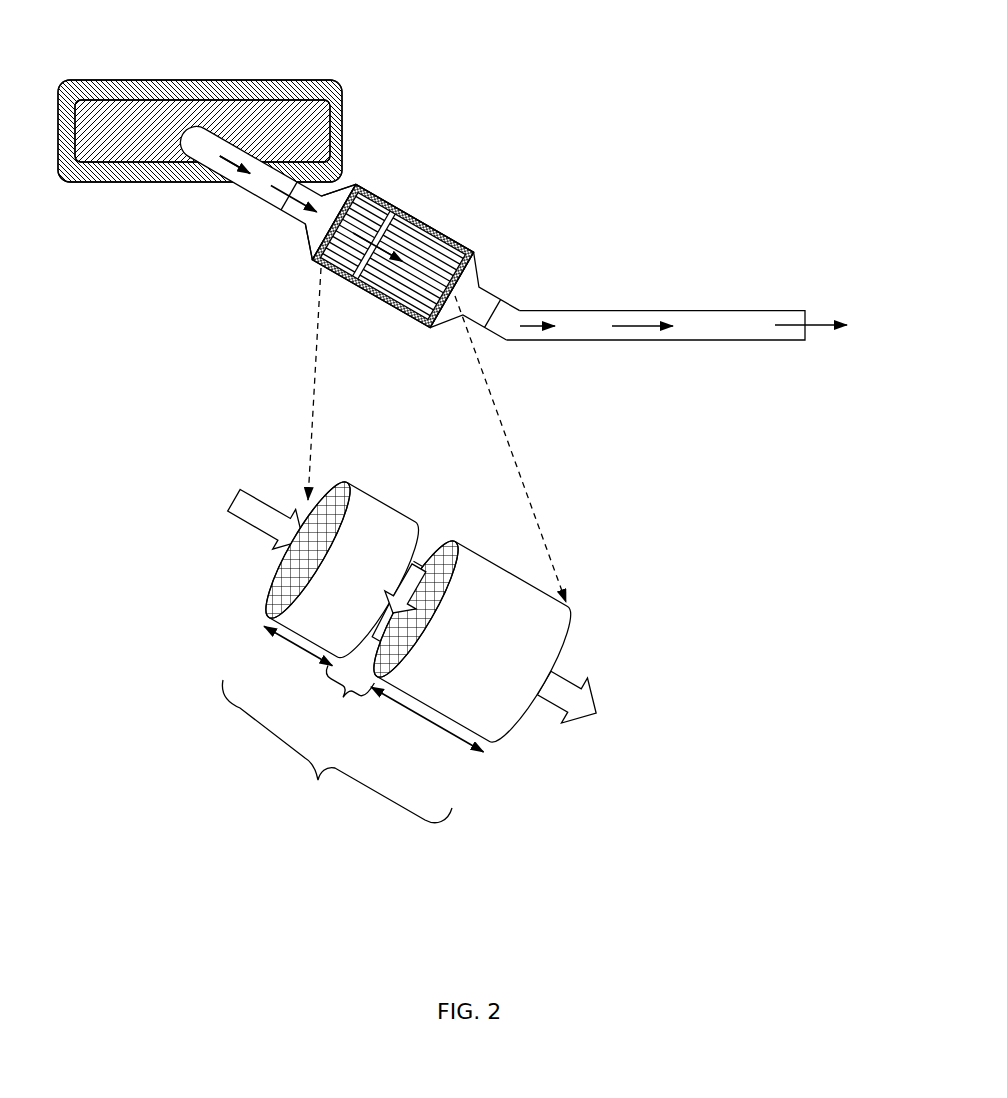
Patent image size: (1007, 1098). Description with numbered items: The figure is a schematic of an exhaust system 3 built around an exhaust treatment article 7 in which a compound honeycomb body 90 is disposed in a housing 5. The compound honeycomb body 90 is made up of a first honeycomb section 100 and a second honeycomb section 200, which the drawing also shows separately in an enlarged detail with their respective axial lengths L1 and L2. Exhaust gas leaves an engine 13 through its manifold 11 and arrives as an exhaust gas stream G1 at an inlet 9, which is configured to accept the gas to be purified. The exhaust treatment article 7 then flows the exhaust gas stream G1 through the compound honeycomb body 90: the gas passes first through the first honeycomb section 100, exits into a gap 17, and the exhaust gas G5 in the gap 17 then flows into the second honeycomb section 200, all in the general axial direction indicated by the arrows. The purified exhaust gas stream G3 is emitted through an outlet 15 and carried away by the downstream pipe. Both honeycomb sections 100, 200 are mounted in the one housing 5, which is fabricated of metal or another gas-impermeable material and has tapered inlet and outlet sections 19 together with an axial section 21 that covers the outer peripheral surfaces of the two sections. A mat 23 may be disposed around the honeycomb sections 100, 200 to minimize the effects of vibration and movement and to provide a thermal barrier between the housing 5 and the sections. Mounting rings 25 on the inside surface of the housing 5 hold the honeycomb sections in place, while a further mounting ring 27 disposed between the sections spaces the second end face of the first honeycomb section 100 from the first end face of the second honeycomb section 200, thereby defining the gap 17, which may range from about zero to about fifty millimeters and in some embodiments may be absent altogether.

The exhaust system 3 is at (489, 53).
The engine 13 is at (150, 80).
The manifold 11 is at (96, 145).
The inlet 9 is at (253, 185).
The exhaust treatment article 7 is at (304, 332).
The tapered inlet and outlet sections 19 is at (358, 182).
The mounting ring 27 is at (397, 210).
The housing 5 is at (424, 217).
The axial section 21 is at (444, 225).
The mounting rings 25 is at (310, 258).
The mat 23 is at (387, 300).
The gap 17 is at (360, 268).
The outlet 15 is at (777, 340).
The exhaust gas stream G1 is at (212, 155).
The purified exhaust gas stream G3 is at (528, 327).
The exhaust gas in the gap G5 is at (412, 570).
The first honeycomb section 100 is at (388, 557).
The second honeycomb section 200 is at (508, 616).
The length of first catalyst L1 is at (298, 648).
The length of second catalyst L2 is at (427, 720).
The compound honeycomb body 90 is at (310, 823).